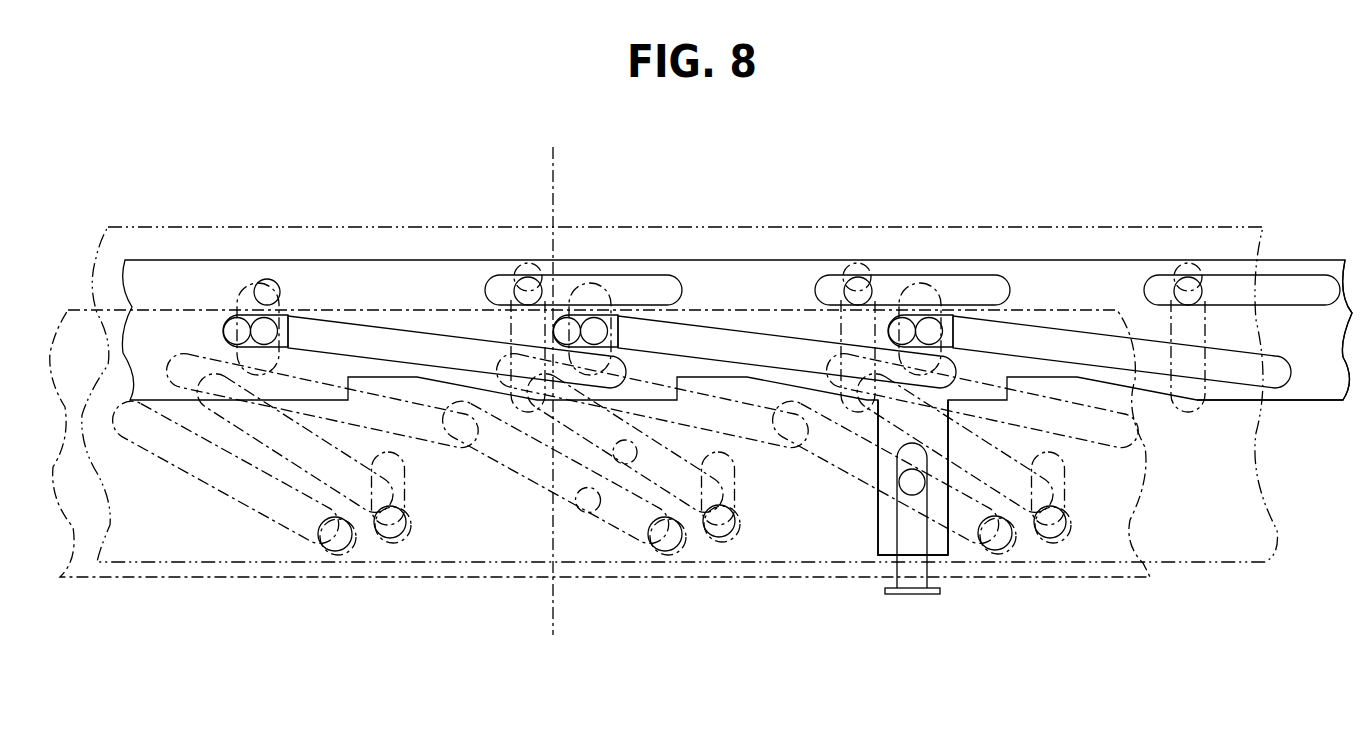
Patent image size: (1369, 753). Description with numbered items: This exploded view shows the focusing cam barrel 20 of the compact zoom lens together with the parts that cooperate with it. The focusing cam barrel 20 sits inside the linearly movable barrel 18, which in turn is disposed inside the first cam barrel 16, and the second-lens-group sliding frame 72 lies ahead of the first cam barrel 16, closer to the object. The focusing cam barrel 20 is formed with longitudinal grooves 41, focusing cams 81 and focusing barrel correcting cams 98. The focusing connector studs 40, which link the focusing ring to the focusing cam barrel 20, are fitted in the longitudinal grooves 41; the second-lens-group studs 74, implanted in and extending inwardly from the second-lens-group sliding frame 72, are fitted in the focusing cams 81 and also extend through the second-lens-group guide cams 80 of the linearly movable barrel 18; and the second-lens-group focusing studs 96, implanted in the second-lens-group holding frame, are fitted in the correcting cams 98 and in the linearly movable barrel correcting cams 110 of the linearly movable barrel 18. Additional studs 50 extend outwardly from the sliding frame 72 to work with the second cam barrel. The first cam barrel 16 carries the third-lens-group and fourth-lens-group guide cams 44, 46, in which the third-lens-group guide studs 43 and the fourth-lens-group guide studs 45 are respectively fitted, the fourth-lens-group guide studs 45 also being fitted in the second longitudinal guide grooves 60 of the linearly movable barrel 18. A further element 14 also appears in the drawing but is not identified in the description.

The base foot 14 is at (915, 590).
The first cam barrel 16 is at (93, 540).
The linearly movable barrel 18 is at (1227, 530).
The focusing cam barrel 20 is at (1325, 390).
The focusing connector studs 40 is at (948, 530).
The longitudinal grooves 41 is at (900, 505).
The 3rd-lens-group guide studs 43 is at (667, 552).
The 3rd-lens-group guide cam 44 is at (582, 510).
The 4th-lens-group guide studs 45 is at (722, 538).
The 4th-lens-group guide cam 46 is at (630, 462).
The additional studs 50 is at (585, 287).
The second longitudinal guide grooves 60 is at (745, 522).
The 2nd-lens-group sliding frame 72 is at (438, 268).
The 2nd-lens-group studs 74 is at (600, 335).
The 2nd-lens-group guide cams 80 is at (738, 398).
The focusing cams 81 is at (790, 335).
The 2nd-lens-group focusing studs 96 is at (1192, 288).
The focusing barrel correcting cams 98 is at (1287, 280).
The linearly movable barrel correcting cams 110 is at (1192, 322).